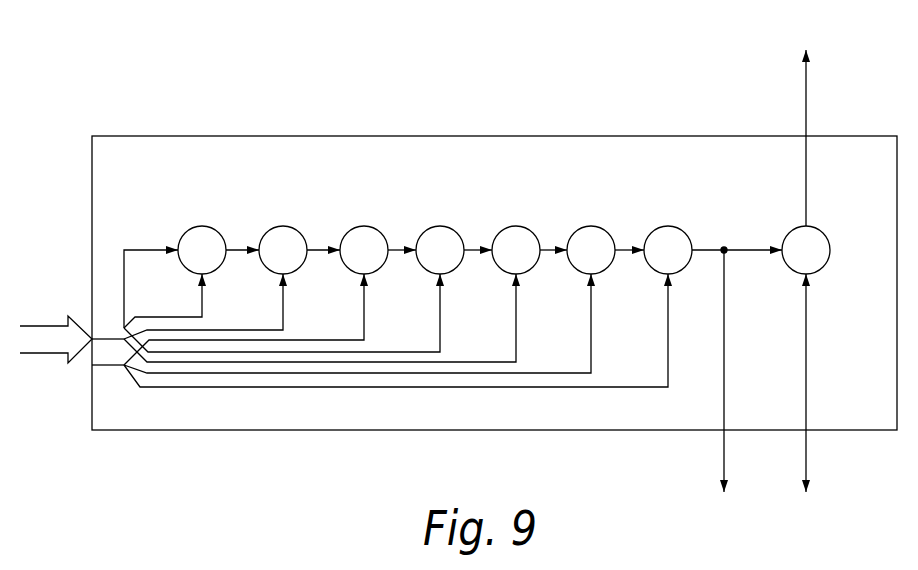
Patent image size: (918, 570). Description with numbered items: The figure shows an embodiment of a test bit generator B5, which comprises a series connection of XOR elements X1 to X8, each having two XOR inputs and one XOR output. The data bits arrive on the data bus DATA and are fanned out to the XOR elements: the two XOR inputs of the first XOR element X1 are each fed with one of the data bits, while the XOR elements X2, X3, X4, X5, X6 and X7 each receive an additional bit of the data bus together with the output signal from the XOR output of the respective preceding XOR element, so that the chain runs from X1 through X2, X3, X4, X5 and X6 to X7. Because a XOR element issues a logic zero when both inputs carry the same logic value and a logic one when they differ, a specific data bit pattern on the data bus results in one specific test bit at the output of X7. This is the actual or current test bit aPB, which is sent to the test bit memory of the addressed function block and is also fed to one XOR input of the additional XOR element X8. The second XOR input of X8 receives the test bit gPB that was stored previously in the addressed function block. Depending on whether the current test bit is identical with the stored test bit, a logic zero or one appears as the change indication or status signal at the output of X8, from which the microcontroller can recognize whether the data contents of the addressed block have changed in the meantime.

The test bit generator B5 is at (127, 103).
The first XOR element X1 is at (202, 250).
The XOR element X2 is at (283, 250).
The XOR element X3 is at (364, 250).
The XOR element X4 is at (440, 250).
The XOR element X5 is at (516, 250).
The XOR element X6 is at (591, 250).
The XOR element X7 is at (668, 250).
The additional XOR element X8 is at (806, 250).
The data bus DATA is at (56, 339).
The current test bit aPB is at (725, 391).
The stored test bit gPB is at (807, 403).